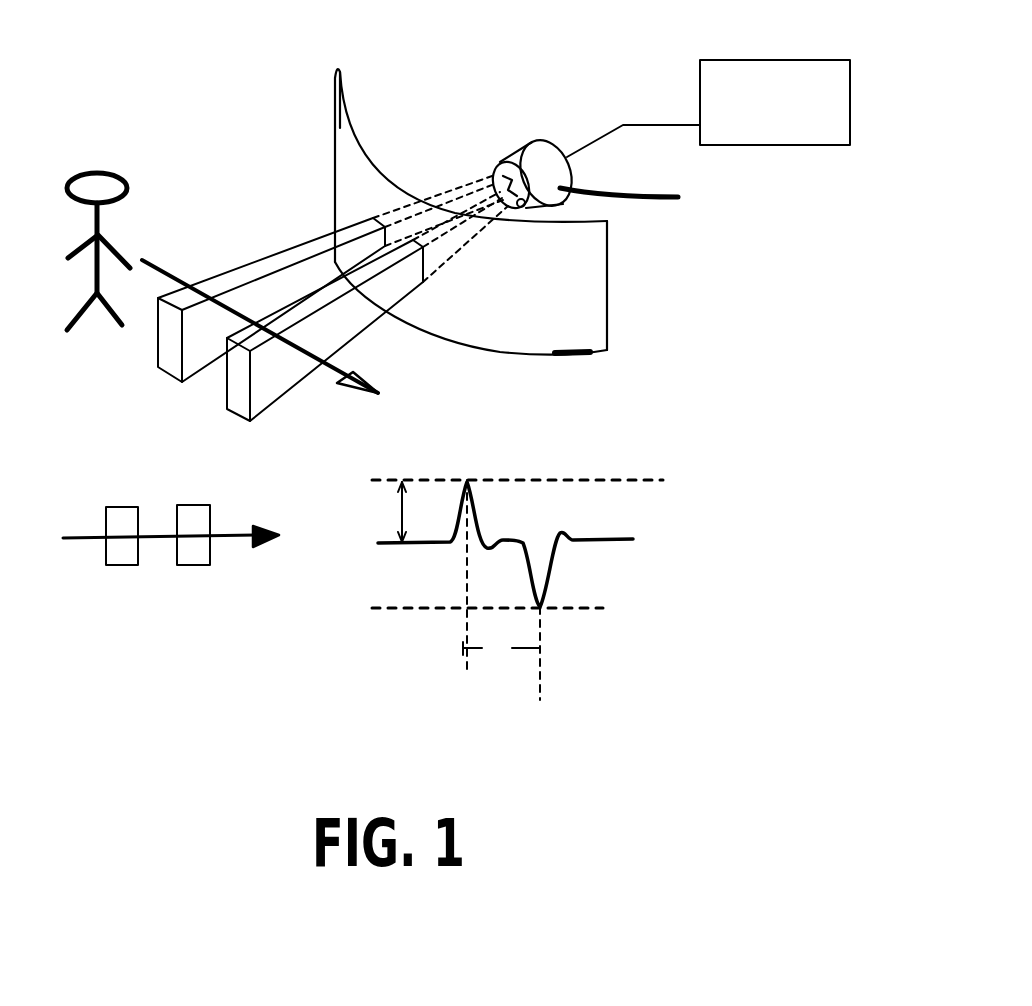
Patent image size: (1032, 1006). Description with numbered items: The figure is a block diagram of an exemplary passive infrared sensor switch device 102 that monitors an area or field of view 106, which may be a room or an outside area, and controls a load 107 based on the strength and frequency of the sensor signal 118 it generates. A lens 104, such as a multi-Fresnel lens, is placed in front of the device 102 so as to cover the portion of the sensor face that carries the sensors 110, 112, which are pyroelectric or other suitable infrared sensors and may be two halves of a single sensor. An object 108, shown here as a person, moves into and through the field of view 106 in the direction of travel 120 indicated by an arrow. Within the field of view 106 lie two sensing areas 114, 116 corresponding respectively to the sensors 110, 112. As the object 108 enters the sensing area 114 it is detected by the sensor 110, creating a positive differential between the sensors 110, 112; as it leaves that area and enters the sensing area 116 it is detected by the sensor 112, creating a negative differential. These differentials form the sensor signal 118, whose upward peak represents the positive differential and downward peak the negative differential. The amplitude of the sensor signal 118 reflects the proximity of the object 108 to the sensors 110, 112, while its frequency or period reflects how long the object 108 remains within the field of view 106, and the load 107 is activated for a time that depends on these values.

The PIR sensor switch device 102 is at (658, 200).
The lens 104 is at (588, 262).
The field of view 106 is at (153, 412).
The load 107 is at (733, 60).
The object 108 is at (130, 203).
The sensor 110 is at (497, 170).
The sensor 112 is at (525, 206).
The sensing area 114 is at (167, 368).
The sensing area 116 is at (237, 414).
The sensor signal 118 is at (610, 548).
The direction of travel 120 is at (255, 406).